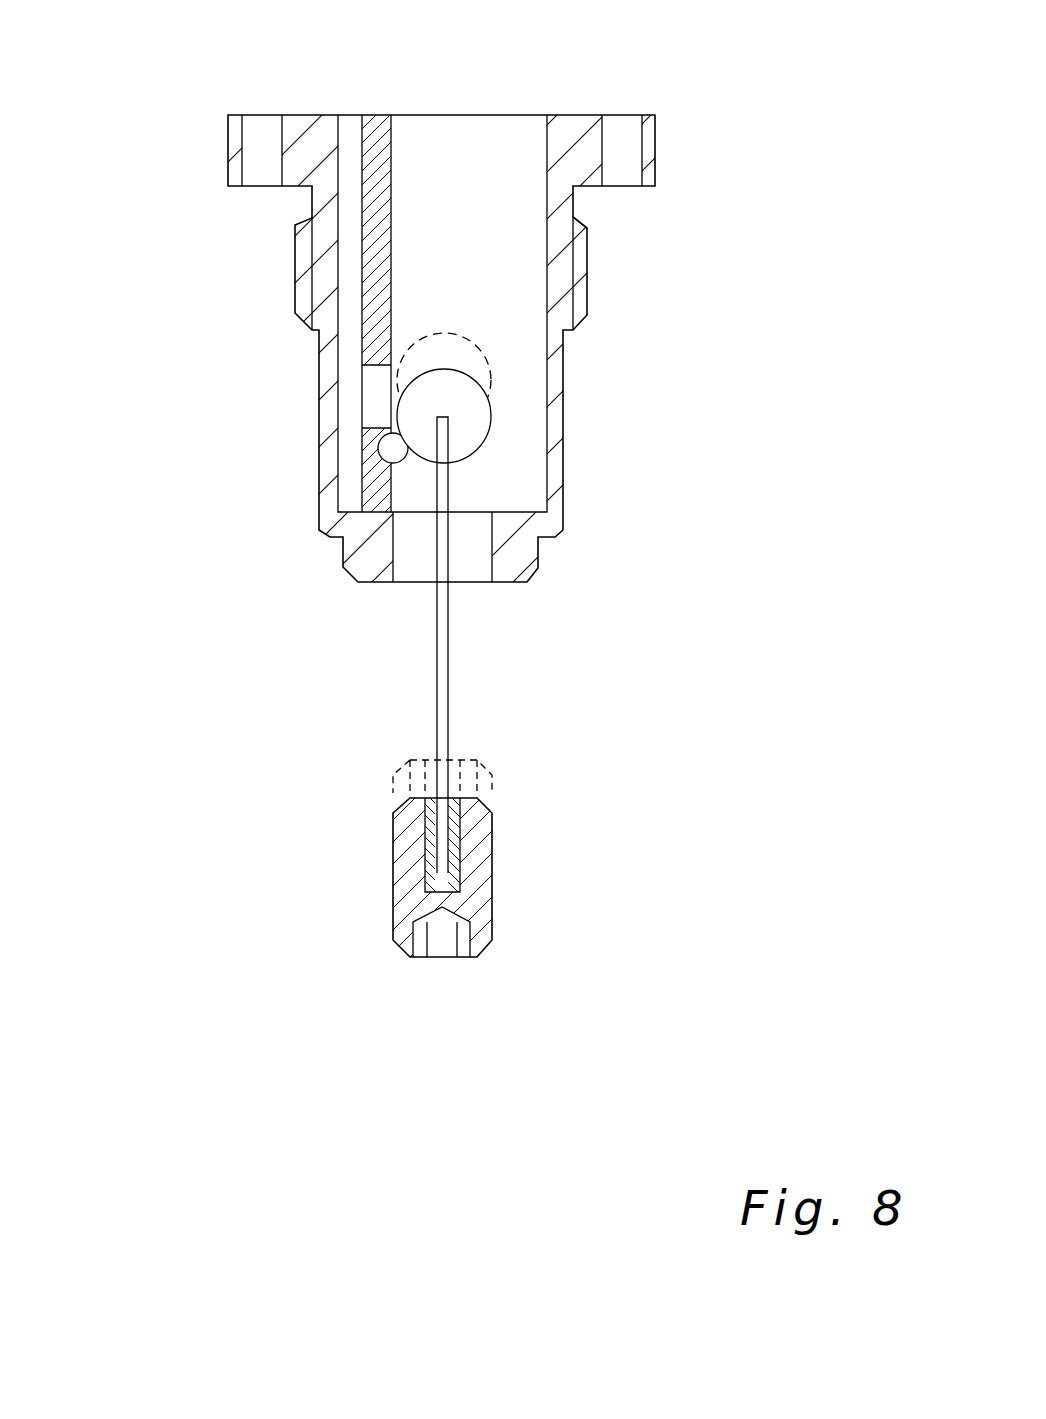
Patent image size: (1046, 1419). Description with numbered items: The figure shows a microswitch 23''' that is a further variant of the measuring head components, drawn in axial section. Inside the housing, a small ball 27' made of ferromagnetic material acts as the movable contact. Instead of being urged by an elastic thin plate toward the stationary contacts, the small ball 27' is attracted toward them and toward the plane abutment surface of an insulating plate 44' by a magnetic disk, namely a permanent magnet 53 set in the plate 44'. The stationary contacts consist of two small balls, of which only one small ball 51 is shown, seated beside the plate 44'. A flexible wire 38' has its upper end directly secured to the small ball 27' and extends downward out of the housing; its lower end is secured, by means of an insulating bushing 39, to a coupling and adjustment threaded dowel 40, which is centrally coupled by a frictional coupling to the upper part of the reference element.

The microswitch 23''' is at (523, 302).
The insulating plate 44' is at (393, 315).
The permanent magnet 53 is at (373, 393).
The small ball 51 is at (378, 452).
The small ball 27' is at (596, 398).
The wire 38' is at (245, 645).
The insulating bushing 39 is at (430, 832).
The threaded dowel 40 is at (402, 892).